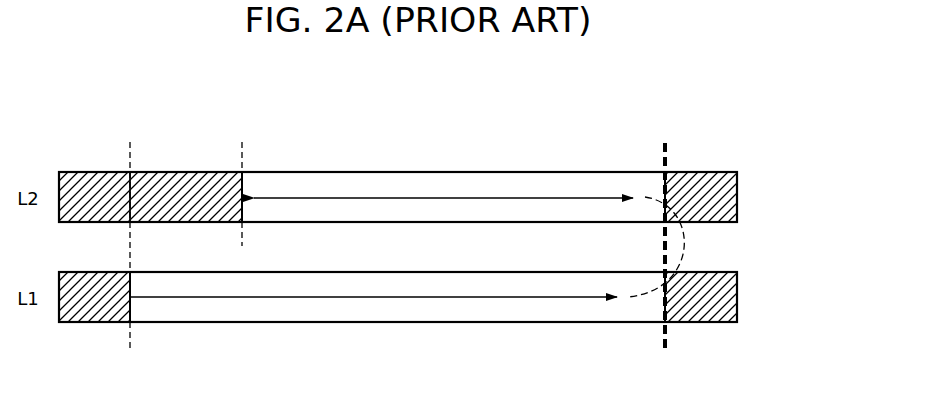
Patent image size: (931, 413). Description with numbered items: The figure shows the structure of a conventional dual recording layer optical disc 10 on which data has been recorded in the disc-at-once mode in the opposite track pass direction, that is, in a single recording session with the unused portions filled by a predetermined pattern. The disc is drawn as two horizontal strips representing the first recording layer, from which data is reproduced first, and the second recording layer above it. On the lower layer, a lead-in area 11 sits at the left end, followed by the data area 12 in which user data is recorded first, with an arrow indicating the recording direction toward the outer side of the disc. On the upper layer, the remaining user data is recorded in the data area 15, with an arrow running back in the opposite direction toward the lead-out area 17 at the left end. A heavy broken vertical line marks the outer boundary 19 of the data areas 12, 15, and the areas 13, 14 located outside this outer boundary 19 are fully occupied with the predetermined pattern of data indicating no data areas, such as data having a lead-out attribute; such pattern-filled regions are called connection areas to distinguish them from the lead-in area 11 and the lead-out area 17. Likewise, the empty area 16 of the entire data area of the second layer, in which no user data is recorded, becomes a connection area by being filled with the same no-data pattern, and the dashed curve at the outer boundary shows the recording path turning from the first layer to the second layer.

The dual recording layer optical disc 10 is at (752, 150).
The lead-in area 11 is at (98, 312).
The data area 12 is at (435, 314).
The area 13 is at (708, 312).
The area 14 is at (707, 183).
The data area 15 is at (435, 181).
The empty area 16 is at (189, 182).
The lead-out area 17 is at (97, 183).
The outer boundary 19 is at (661, 158).